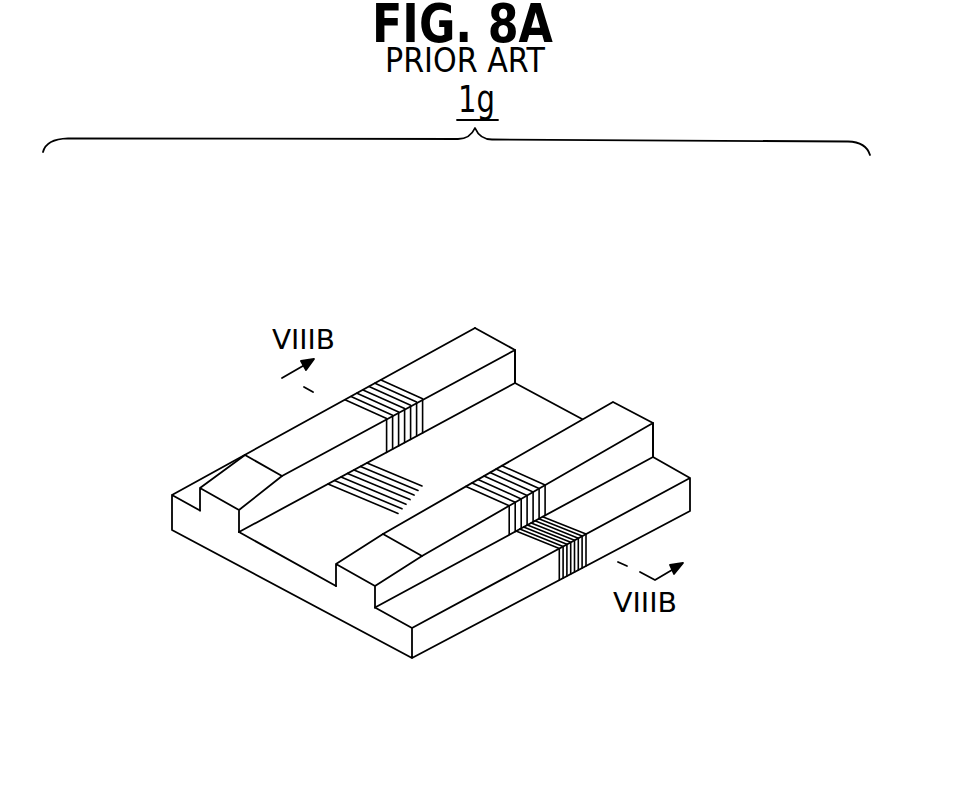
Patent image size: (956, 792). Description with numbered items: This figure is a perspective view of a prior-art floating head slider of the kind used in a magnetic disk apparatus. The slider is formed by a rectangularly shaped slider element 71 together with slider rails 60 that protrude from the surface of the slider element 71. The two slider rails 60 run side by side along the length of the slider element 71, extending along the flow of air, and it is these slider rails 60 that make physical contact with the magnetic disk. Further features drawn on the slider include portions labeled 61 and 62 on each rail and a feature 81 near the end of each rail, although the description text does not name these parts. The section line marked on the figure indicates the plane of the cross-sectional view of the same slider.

The slider rails 60 is at (261, 447).
The lid 61 is at (452, 352).
The side face of lid 62 is at (508, 372).
The slider element 71 is at (556, 414).
The chamfered end portion 81 is at (237, 491).